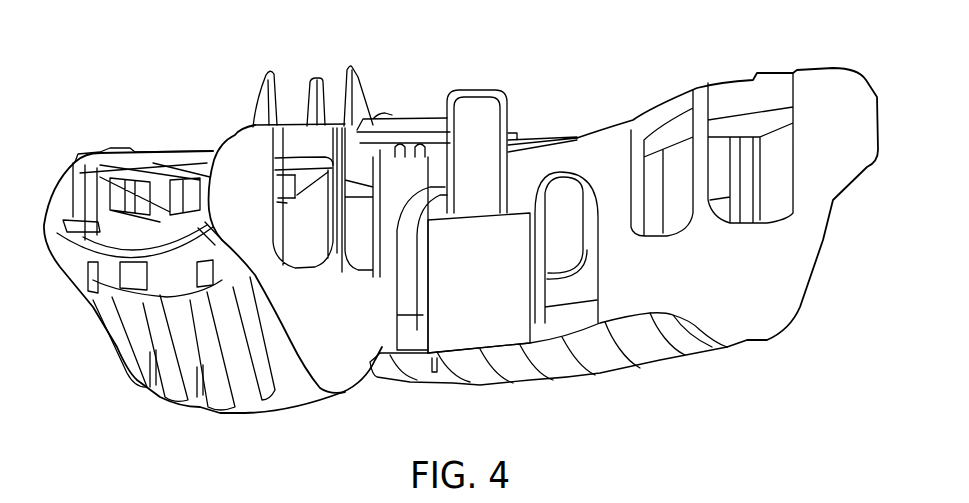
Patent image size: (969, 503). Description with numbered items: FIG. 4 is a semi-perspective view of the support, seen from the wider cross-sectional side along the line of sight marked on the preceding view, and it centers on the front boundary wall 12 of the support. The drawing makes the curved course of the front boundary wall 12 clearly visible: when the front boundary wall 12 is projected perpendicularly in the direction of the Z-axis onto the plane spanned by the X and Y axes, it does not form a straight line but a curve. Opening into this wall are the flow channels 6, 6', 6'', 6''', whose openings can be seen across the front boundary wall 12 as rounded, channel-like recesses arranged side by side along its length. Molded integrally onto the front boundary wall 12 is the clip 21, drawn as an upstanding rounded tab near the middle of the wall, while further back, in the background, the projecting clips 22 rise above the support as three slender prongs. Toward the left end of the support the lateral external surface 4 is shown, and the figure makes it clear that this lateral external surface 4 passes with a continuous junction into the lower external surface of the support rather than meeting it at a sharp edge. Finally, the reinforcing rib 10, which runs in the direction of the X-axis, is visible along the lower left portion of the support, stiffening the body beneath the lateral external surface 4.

The lateral external surface 4 is at (110, 222).
The reinforcing rib 10 is at (77, 250).
The projecting clips 22 is at (350, 67).
The clip 21 is at (482, 110).
The flow channel 6' is at (614, 184).
The flow channel 6'' is at (362, 226).
The flow channel 6''' is at (303, 227).
The flow channel 6 is at (775, 148).
The front boundary wall 12 is at (783, 282).